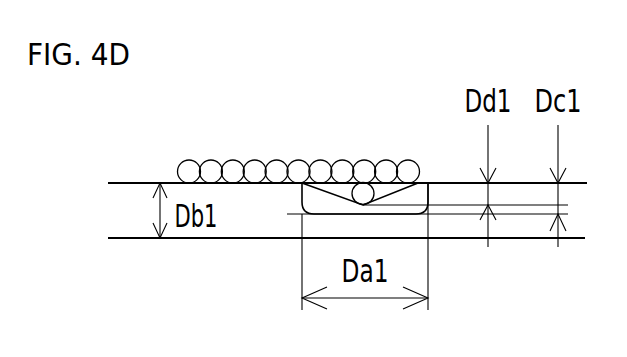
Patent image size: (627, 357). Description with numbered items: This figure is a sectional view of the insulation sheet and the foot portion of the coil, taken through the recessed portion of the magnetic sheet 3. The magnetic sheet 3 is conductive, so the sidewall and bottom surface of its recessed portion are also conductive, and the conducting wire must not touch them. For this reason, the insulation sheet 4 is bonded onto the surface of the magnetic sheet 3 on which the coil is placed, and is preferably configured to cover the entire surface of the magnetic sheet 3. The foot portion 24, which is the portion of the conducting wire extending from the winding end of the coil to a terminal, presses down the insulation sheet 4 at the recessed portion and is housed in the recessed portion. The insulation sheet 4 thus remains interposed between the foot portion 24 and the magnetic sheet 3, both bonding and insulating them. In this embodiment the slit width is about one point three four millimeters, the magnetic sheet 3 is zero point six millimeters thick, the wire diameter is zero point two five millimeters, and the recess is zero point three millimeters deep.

The magnetic sheet 3 is at (117, 215).
The insulation sheet 4 is at (312, 178).
The foot portion 24 is at (345, 172).